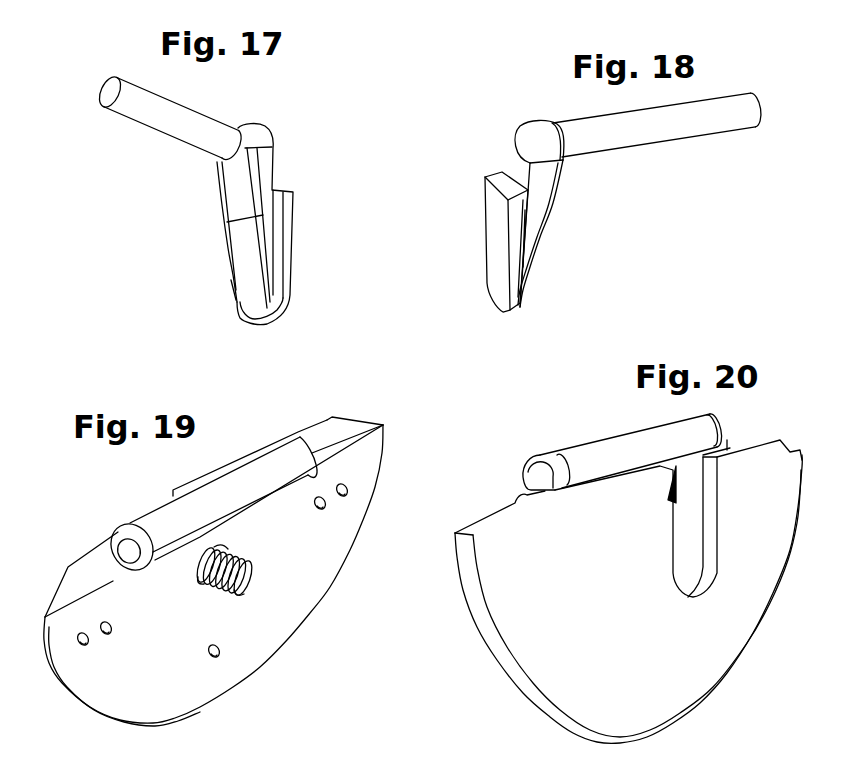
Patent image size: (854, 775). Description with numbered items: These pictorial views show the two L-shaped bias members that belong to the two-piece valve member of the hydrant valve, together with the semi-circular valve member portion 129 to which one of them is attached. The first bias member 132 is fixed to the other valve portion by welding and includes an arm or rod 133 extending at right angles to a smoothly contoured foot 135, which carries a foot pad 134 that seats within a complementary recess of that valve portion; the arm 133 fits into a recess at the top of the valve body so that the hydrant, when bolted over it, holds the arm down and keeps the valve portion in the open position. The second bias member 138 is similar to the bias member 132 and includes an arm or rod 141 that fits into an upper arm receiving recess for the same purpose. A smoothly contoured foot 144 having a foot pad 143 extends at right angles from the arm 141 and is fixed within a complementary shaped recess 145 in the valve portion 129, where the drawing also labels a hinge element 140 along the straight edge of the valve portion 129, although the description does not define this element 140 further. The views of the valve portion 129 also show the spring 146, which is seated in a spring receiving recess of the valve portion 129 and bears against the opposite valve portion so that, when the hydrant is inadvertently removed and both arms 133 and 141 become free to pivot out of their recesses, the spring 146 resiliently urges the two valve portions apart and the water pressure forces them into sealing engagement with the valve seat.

In FIG. 19, the semi-circular valve member portion 129 is at (270, 620).
In FIG. 20, the semi-circular valve member portion 129 is at (572, 635).
In FIG. 17, the L-shaped bias member 132 is at (204, 209).
In FIG. 17, the arm or rod 133 is at (152, 123).
In FIG. 17, the foot pad 134 is at (297, 220).
In FIG. 17, the foot 135 is at (208, 231).
In FIG. 18, the L-shaped bias member 138 is at (600, 197).
In FIG. 19, the hinge tube 140 is at (278, 478).
In FIG. 20, the hinge tube 140 is at (607, 450).
In FIG. 18, the arm or rod 141 is at (683, 130).
In FIG. 18, the foot pad 143 is at (492, 230).
In FIG. 18, the foot 144 is at (552, 205).
In FIG. 19, the recess 145 is at (158, 505).
In FIG. 20, the recess 145 is at (693, 570).
In FIG. 19, the spring 146 is at (263, 552).